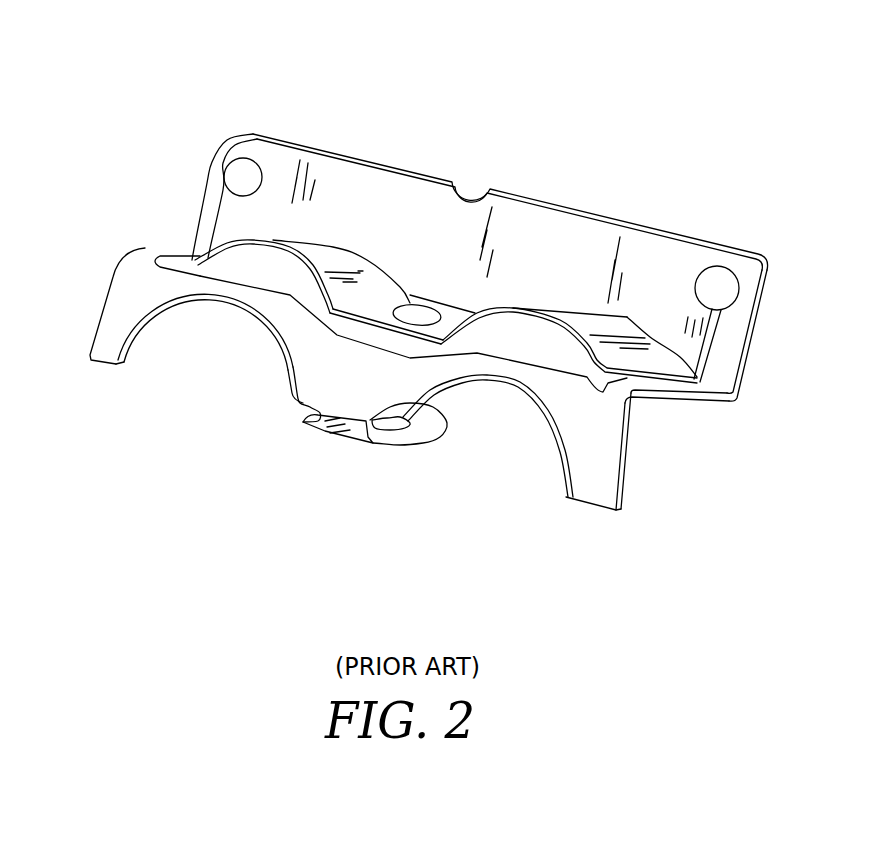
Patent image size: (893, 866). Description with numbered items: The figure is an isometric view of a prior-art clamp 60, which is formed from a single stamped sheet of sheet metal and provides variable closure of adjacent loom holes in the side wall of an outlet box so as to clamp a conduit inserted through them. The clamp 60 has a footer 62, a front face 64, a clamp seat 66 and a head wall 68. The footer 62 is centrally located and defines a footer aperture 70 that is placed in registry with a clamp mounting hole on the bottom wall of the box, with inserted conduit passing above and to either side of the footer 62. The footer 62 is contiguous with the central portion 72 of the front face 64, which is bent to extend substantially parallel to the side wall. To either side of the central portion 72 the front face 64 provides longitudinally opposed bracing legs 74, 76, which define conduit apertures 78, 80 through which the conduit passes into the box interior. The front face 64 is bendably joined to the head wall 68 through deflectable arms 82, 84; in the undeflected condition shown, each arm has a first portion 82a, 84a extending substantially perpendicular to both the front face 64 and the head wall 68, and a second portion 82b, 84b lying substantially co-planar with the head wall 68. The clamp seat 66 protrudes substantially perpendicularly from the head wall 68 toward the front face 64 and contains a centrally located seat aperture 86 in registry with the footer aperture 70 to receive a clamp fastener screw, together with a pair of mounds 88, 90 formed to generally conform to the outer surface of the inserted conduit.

The clamp 60 is at (69, 33).
The footer 62 is at (443, 417).
The front face 64 is at (143, 277).
The clamp seat 66 is at (382, 285).
The head wall 68 is at (588, 228).
The footer aperture 70 is at (398, 433).
The central portion 72 is at (290, 367).
The bracing leg 74 is at (122, 318).
The bracing leg 76 is at (600, 431).
The conduit aperture 78 is at (218, 353).
The conduit aperture 80 is at (529, 479).
The deflectable arm 82 is at (140, 102).
The first portion 82a is at (165, 252).
The second portion 82b is at (193, 193).
The deflectable arm 84 is at (828, 307).
The first portion 84a is at (677, 400).
The second portion 84b is at (748, 341).
The seat aperture 86 is at (413, 310).
The mound 88 is at (333, 262).
The mound 90 is at (627, 317).